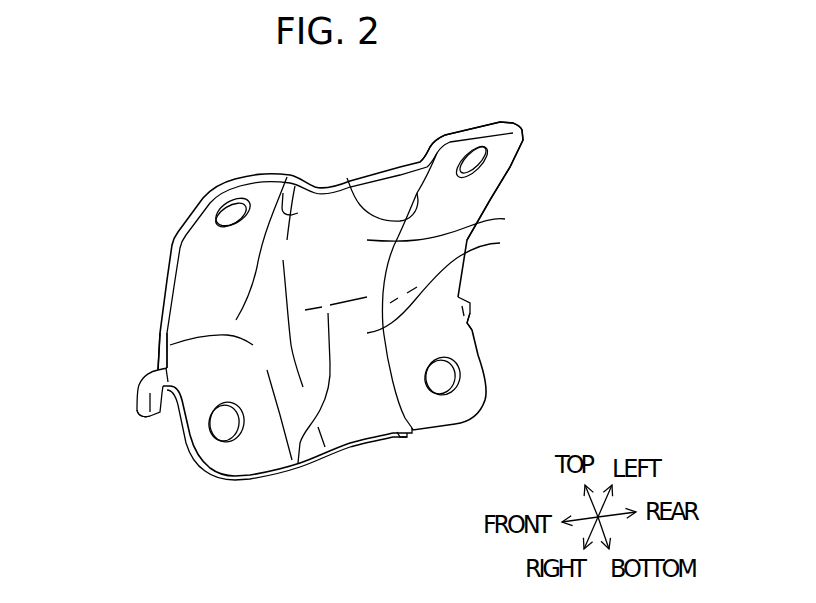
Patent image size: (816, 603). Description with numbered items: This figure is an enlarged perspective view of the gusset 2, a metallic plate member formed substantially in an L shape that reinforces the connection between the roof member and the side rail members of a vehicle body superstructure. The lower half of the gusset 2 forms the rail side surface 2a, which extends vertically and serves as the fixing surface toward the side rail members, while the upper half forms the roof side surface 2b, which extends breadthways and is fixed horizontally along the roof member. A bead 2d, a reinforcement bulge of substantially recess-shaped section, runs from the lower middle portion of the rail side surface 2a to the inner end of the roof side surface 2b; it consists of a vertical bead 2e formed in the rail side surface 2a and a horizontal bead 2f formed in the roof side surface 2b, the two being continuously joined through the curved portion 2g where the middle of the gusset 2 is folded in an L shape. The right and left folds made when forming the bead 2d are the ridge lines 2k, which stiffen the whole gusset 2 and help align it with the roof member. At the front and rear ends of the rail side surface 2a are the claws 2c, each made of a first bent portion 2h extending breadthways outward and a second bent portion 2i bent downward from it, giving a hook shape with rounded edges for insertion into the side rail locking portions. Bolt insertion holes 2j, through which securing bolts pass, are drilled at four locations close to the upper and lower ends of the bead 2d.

The gusset 2 is at (158, 226).
The rail side surface 2a is at (477, 391).
The roof side surface 2b is at (483, 183).
The claw 2c is at (137, 388).
The bead 2d is at (549, 207).
The vertical bead 2e is at (500, 243).
The horizontal bead 2f is at (505, 219).
The curved portion 2g is at (298, 463).
The first bent portion 2h is at (156, 377).
The second bent portion 2i is at (142, 418).
The bolt insertion hole 2j is at (488, 160).
The ridge line 2k is at (347, 178).